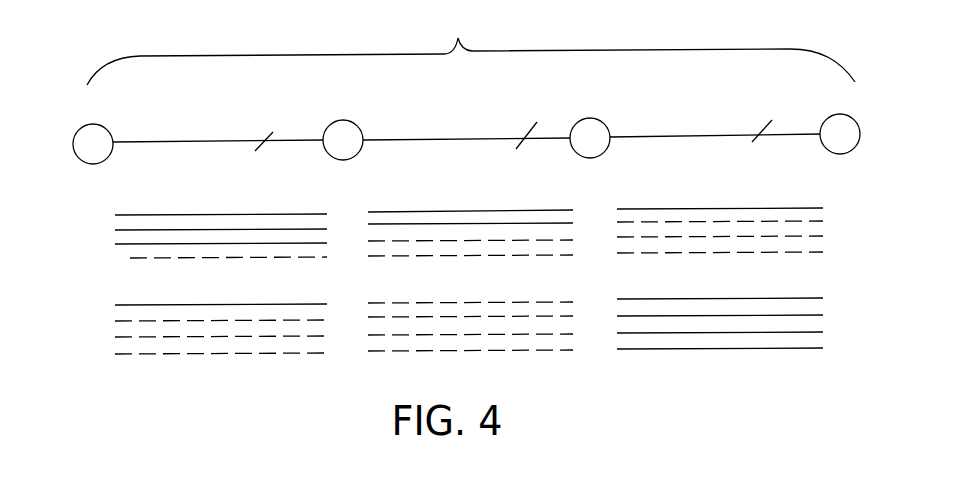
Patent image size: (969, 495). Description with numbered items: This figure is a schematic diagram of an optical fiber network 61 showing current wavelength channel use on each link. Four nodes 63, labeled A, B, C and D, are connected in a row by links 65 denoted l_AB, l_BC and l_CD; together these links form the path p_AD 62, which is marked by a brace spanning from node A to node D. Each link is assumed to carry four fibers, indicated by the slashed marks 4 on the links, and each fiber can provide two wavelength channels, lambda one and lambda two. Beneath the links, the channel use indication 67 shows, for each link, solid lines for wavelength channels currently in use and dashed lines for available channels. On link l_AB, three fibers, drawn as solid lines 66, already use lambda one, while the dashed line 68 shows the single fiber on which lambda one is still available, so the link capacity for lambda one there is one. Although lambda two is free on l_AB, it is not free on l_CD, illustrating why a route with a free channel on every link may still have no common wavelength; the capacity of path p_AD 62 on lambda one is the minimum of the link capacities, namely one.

The optical network path 61 is at (84, 60).
The path p_AD 62 is at (471, 42).
The network nodes 63 is at (80, 160).
The fiber links between nodes 65 is at (168, 140).
The number of wavelength channels per link 4 is at (513, 128).
The solid lines 66 is at (112, 209).
The dashed lines 68 is at (126, 259).
The wavelength channel use indication 67 is at (855, 200).